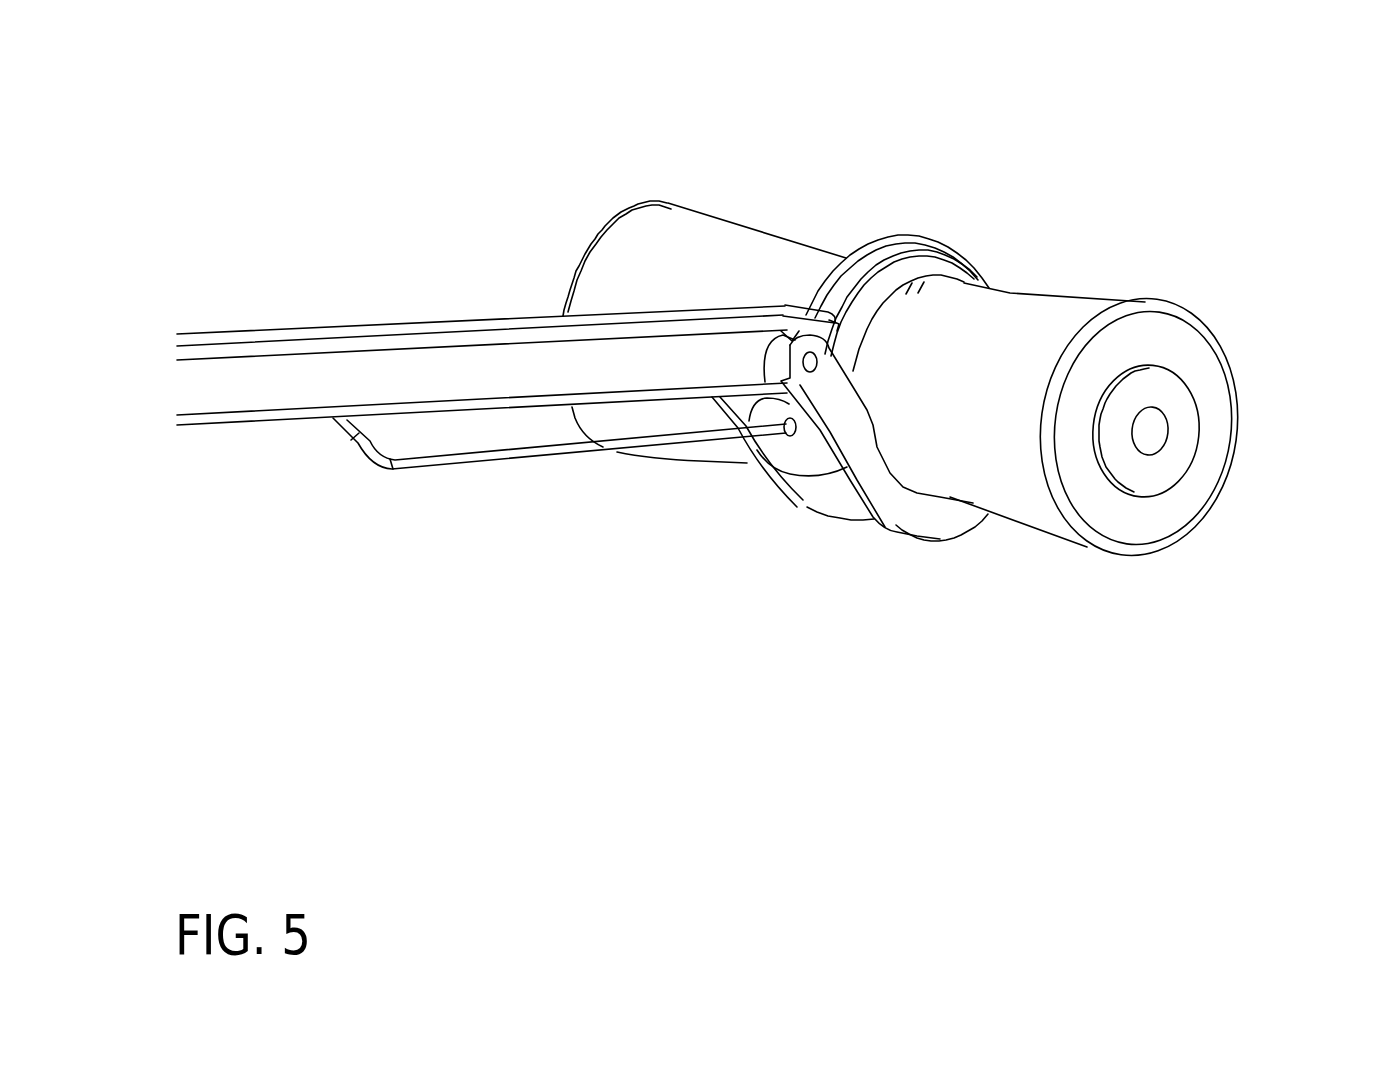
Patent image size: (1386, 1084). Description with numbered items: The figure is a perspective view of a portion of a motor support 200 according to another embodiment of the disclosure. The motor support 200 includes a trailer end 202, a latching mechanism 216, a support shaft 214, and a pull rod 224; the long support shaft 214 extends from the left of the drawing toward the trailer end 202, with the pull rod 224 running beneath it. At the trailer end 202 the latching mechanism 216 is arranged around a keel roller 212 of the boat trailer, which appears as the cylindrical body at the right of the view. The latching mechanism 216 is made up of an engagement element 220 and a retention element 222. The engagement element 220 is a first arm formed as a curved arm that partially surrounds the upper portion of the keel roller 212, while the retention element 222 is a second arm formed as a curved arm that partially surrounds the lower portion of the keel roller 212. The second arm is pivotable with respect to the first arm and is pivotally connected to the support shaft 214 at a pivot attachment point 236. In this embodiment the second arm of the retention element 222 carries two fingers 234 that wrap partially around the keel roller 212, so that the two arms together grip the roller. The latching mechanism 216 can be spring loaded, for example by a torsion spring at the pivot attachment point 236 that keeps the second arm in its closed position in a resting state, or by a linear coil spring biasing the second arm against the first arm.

The motor support 200 is at (1275, 802).
The trailer end 202 is at (977, 722).
The keel roller 212 is at (1022, 338).
The support shaft 214 is at (289, 375).
The latching mechanism 216 is at (914, 210).
The engagement element (first arm) 220 is at (957, 268).
The retention element (second arm) 222 is at (877, 572).
The pull rod 224 is at (468, 459).
The fingers 234 is at (810, 493).
The pivot attachment point 236 is at (791, 338).